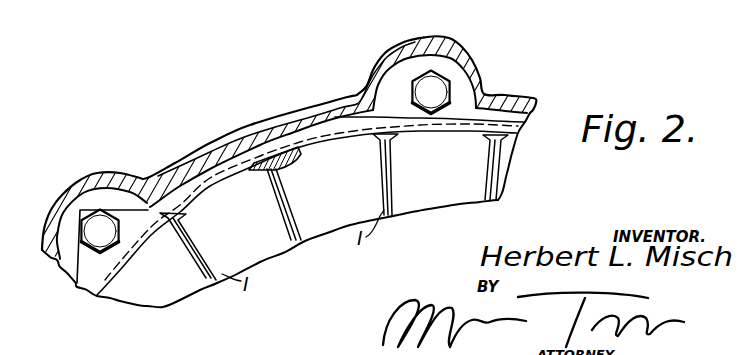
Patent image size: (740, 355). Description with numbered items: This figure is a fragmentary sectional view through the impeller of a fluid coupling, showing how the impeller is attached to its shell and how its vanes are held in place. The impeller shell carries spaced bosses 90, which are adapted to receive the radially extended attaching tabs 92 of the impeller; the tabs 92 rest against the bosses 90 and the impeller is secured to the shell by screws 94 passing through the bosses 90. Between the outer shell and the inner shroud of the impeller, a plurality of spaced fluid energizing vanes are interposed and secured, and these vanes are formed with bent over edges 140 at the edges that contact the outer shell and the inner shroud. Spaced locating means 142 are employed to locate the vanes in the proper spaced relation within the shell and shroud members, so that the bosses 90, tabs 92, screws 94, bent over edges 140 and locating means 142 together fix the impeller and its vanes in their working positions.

The bosses 90 is at (100, 172).
The attaching tabs 92 is at (460, 98).
The screws 94 is at (424, 86).
The bent over edges 140 is at (383, 140).
The locating means 142 is at (262, 162).